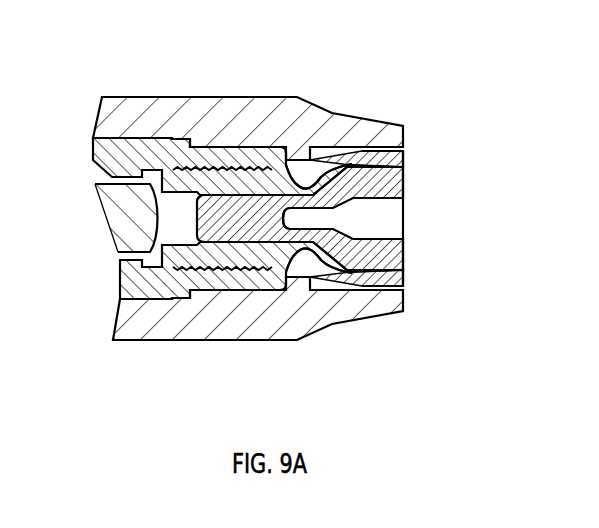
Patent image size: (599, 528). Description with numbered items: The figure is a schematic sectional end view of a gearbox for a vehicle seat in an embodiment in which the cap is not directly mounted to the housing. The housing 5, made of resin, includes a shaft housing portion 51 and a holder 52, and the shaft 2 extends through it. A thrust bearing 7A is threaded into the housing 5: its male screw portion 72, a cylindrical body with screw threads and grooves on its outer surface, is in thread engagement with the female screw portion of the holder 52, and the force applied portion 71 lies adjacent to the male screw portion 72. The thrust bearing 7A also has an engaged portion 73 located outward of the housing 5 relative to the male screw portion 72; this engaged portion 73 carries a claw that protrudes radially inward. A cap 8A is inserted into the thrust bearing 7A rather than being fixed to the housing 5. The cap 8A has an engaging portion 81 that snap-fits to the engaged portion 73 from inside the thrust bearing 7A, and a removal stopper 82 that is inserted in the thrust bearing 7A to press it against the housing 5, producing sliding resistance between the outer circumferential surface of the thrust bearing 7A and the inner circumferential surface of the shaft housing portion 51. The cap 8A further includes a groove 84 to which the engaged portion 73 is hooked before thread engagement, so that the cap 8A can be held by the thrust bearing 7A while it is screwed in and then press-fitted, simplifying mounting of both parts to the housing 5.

The housing 5 is at (121, 96).
The shaft 2 is at (124, 215).
The force applied portion 71 is at (168, 197).
The male screw portion 72 is at (242, 183).
The thrust bearing 7A is at (320, 158).
The engaged portion 73 is at (406, 156).
The engaging portion 81 is at (404, 185).
The removal stopper 82 is at (374, 190).
The cap 8A is at (406, 255).
The groove 84 is at (336, 252).
The shaft housing portion 51 is at (173, 326).
The holder 52 is at (213, 284).